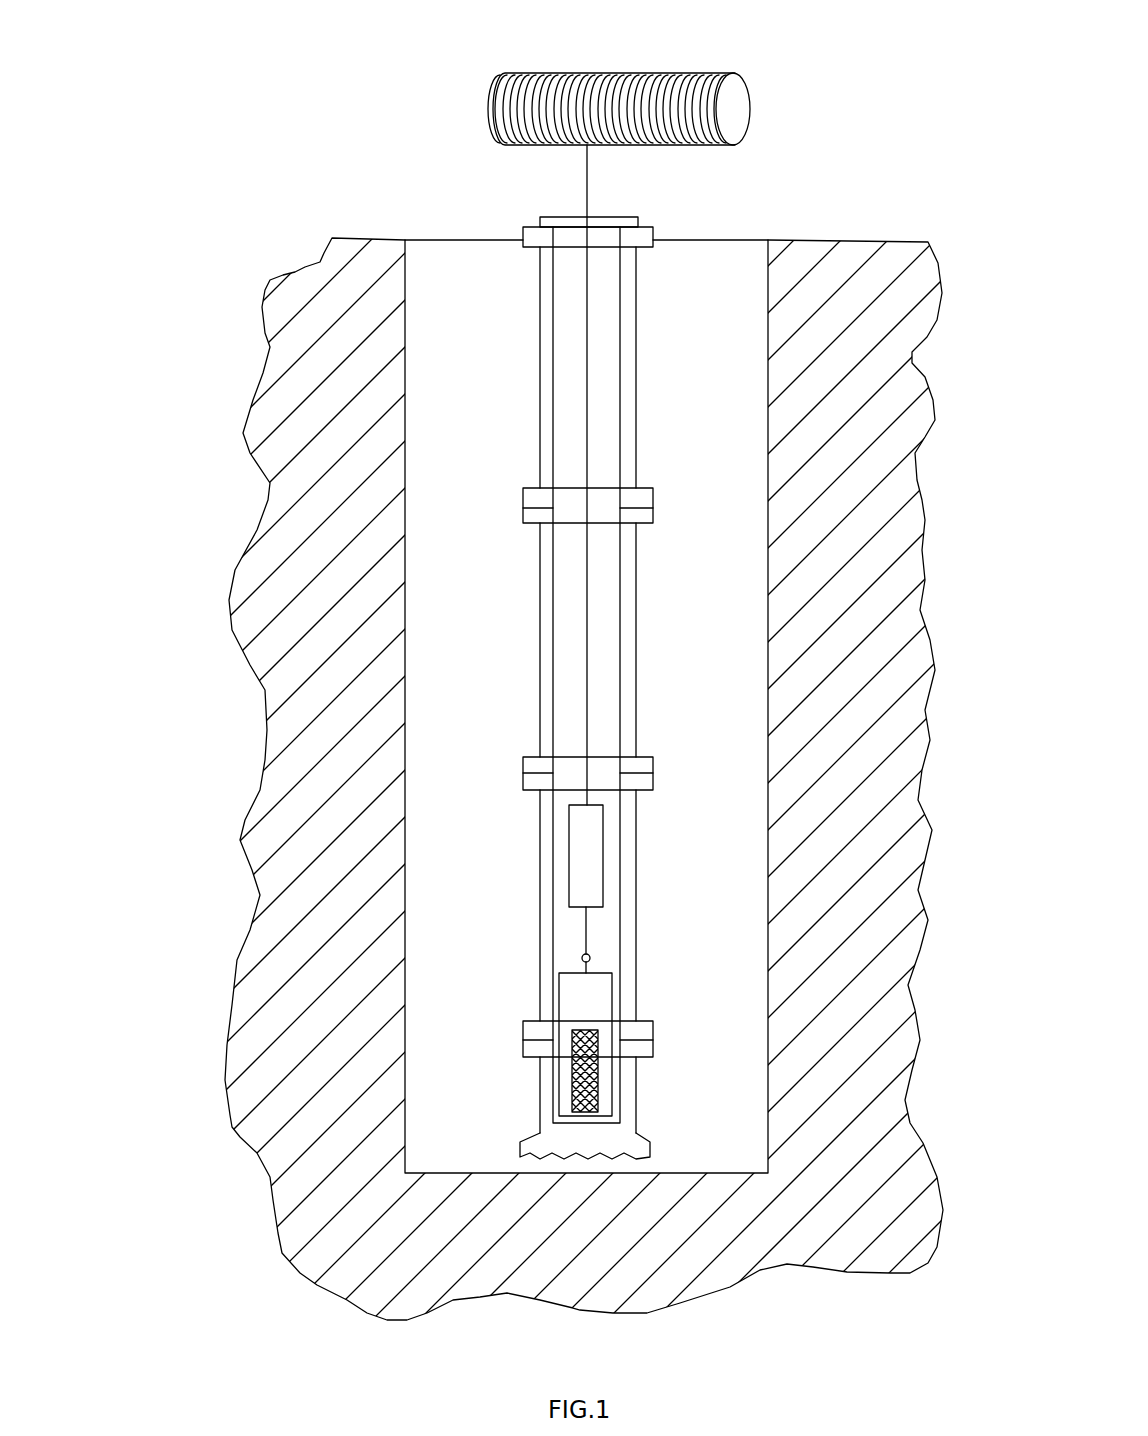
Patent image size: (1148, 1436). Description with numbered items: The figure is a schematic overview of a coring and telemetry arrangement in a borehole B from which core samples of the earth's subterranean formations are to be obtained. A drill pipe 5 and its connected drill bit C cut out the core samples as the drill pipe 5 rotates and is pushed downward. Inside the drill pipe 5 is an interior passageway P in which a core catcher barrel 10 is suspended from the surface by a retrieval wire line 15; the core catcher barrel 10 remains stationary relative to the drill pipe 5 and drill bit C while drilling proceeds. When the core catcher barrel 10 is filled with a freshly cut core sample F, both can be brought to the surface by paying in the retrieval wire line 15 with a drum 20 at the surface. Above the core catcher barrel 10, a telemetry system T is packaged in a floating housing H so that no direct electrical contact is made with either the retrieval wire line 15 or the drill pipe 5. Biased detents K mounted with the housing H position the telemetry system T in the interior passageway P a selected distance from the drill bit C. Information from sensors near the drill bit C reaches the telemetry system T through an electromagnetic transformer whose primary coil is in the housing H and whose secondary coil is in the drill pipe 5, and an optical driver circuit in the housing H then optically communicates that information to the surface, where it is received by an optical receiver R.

The drum 20 is at (748, 83).
The optical receiver R is at (575, 228).
The drill pipe 5 is at (538, 412).
The interior passageway P is at (578, 601).
The borehole B is at (713, 601).
The retrieval wire line 15 is at (588, 745).
The biased detents K is at (568, 867).
The floating housing H is at (595, 851).
The telemetry system T is at (586, 887).
The core catcher barrel 10 is at (575, 972).
The core sample F is at (590, 1087).
The drill bit C is at (520, 1143).